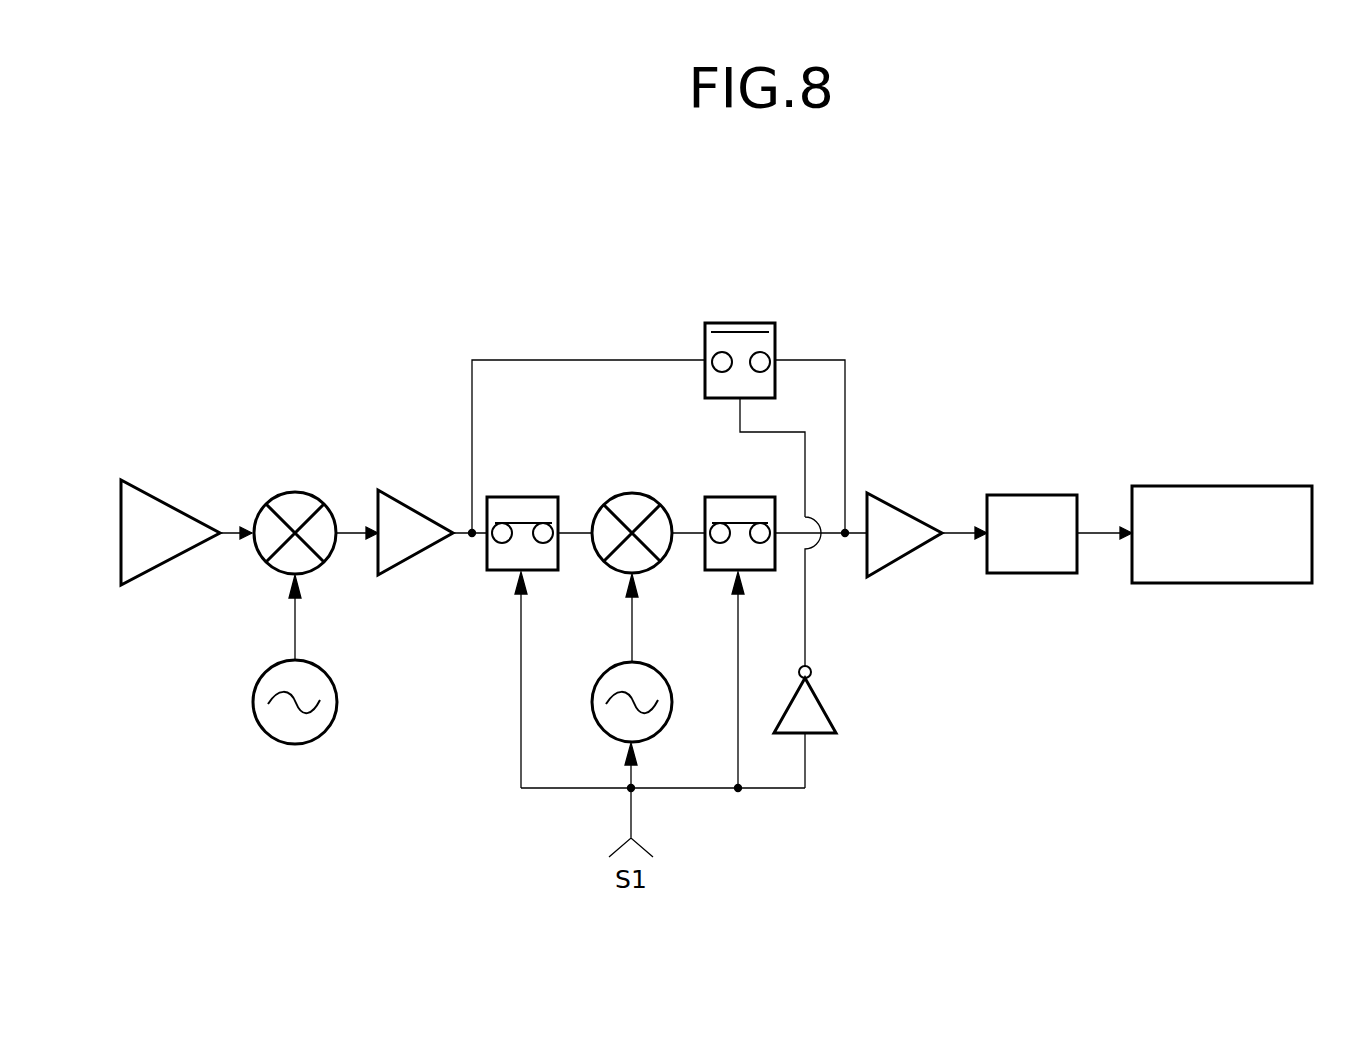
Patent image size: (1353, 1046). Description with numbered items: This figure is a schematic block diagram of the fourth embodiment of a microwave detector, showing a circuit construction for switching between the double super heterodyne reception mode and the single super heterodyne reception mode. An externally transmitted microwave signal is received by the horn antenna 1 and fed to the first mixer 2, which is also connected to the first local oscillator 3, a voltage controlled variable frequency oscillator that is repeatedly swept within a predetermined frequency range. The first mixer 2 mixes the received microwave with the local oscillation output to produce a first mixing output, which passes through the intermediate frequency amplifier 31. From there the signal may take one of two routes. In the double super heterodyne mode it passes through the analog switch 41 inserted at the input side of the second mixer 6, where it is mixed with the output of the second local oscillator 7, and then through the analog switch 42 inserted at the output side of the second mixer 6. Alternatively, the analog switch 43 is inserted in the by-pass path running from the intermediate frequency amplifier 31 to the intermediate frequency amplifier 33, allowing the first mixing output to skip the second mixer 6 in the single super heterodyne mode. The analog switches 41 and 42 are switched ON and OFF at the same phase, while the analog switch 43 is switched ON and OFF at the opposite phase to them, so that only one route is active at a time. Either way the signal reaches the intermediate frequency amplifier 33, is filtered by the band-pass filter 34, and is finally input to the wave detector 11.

The horn antenna 1 is at (157, 495).
The first mixer 2 is at (290, 490).
The first local oscillator 3 is at (252, 688).
The intermediate frequency amplifier 31 is at (405, 503).
The analog switch 41 is at (518, 497).
The second mixer 6 is at (628, 493).
The second local oscillator 7 is at (672, 688).
The analog switch 42 is at (733, 497).
The analog switch 43 is at (733, 323).
The intermediate frequency amplifier 33 is at (895, 505).
The band-pass filter 34 is at (1032, 495).
The wave detector 11 is at (1220, 482).